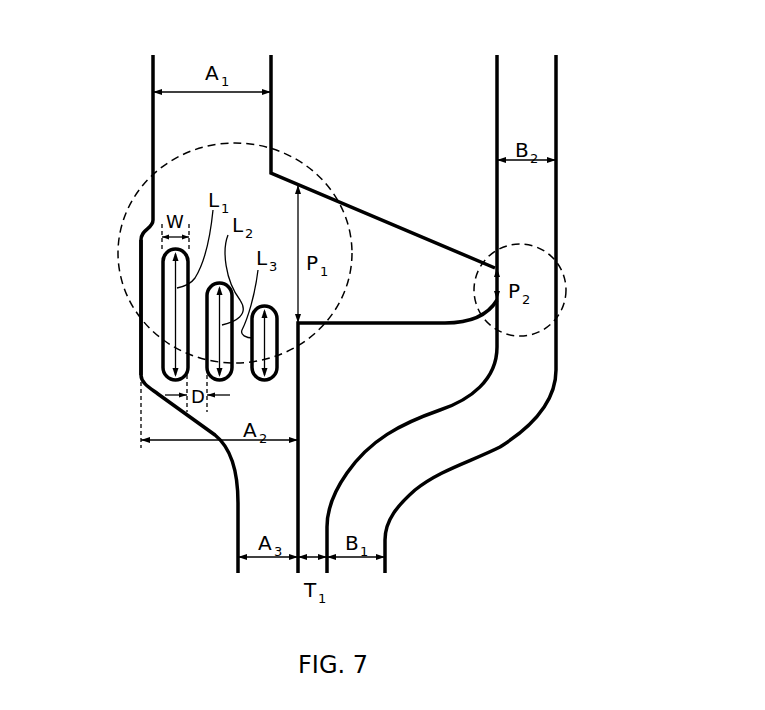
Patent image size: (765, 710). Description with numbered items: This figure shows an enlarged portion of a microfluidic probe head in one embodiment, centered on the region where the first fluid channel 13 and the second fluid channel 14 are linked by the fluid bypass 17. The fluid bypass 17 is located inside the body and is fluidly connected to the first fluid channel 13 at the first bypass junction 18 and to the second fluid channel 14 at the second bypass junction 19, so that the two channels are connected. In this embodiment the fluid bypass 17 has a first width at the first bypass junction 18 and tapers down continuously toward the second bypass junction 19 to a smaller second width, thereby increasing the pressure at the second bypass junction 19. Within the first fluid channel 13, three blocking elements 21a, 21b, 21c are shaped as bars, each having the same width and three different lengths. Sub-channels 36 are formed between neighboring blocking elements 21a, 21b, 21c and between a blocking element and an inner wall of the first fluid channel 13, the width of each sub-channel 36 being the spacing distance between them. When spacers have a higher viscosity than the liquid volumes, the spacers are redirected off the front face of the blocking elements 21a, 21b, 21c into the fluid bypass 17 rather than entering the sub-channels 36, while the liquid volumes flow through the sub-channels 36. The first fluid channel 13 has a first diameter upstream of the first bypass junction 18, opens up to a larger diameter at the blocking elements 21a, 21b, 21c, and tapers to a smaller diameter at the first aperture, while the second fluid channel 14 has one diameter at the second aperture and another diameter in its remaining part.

The first fluid channel 13 is at (153, 118).
The second fluid channel 14 is at (556, 117).
The fluid bypass 17 is at (402, 223).
The first bypass junction 18 is at (122, 225).
The second bypass junction 19 is at (560, 268).
The blocking element 21a is at (177, 288).
The blocking element 21b is at (230, 380).
The blocking element 21c is at (278, 337).
The sub-channels 36 is at (197, 314).